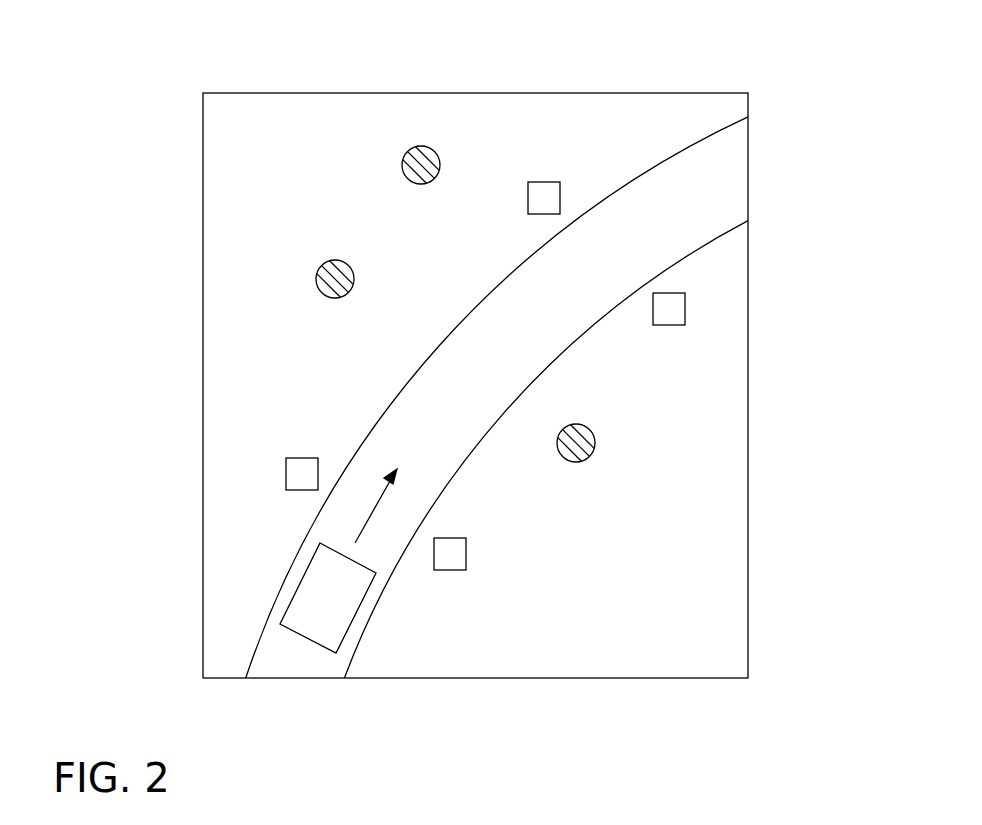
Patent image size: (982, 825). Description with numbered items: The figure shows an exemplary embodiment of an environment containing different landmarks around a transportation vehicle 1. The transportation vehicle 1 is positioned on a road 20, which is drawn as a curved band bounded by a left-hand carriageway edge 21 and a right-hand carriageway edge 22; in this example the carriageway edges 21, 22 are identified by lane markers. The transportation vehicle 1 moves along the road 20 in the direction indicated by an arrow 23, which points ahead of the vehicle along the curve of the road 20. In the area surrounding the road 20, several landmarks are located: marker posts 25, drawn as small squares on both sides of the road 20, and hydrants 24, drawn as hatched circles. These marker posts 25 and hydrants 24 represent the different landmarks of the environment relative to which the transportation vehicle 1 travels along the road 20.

The transportation vehicle 1 is at (336, 611).
The road 20 is at (717, 197).
The left-hand carriageway edge 21 is at (692, 142).
The right-hand carriageway edge 22 is at (707, 245).
The arrow 23 is at (350, 508).
The hydrant 24 is at (423, 147).
The marker post 25 is at (544, 182).